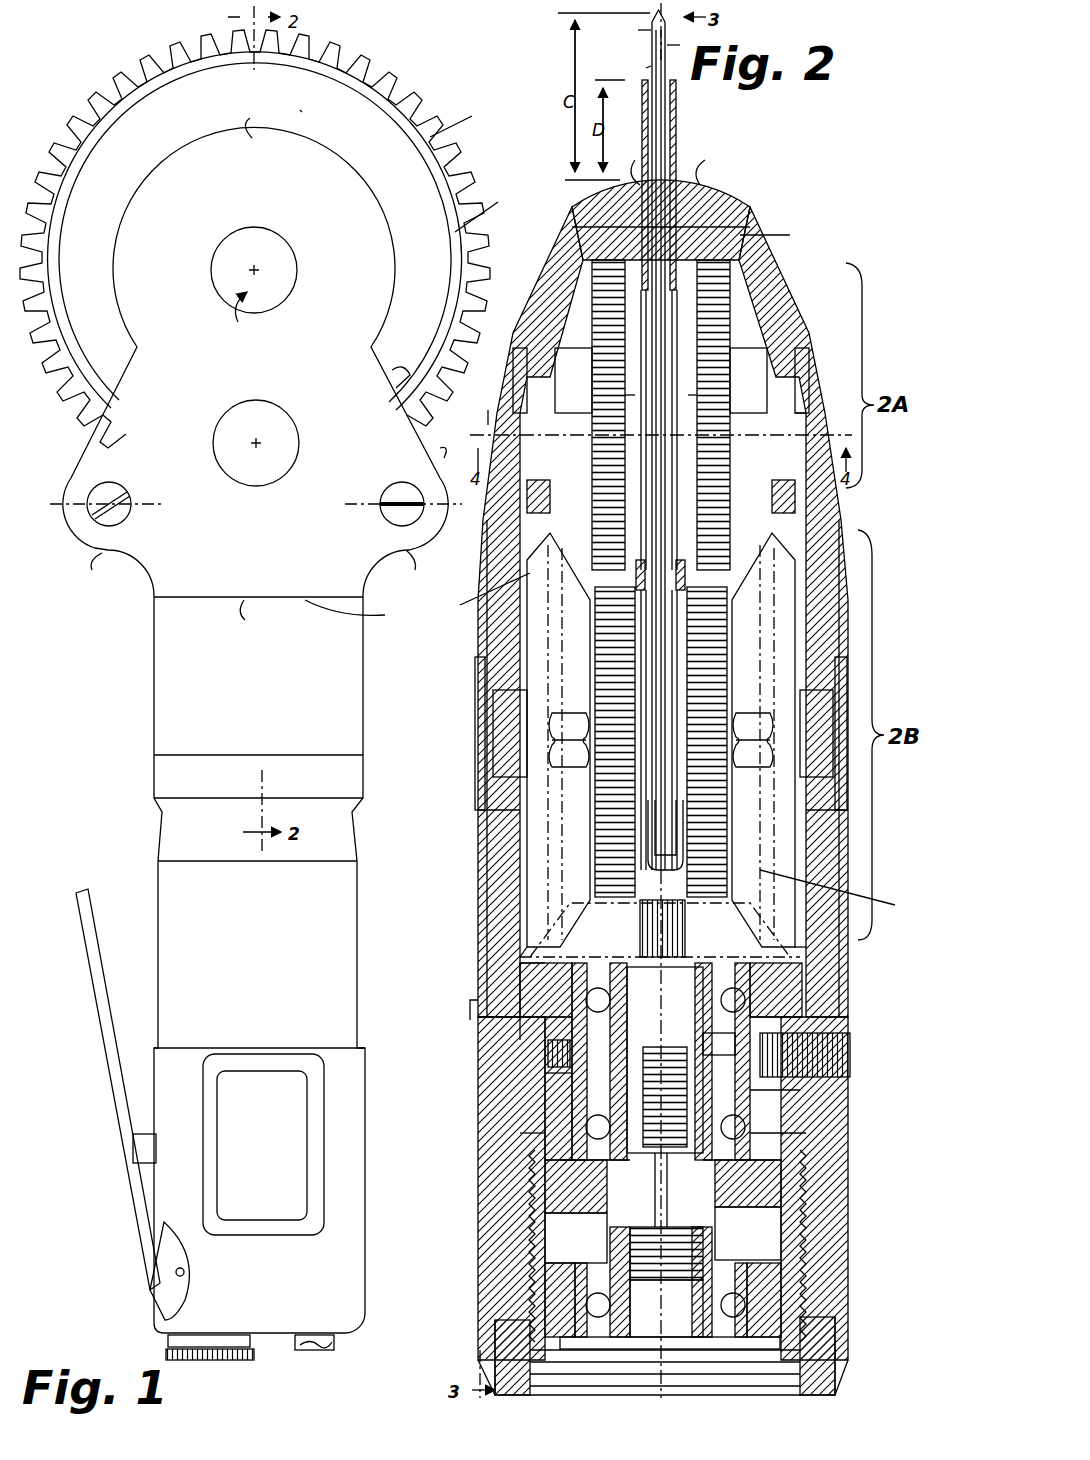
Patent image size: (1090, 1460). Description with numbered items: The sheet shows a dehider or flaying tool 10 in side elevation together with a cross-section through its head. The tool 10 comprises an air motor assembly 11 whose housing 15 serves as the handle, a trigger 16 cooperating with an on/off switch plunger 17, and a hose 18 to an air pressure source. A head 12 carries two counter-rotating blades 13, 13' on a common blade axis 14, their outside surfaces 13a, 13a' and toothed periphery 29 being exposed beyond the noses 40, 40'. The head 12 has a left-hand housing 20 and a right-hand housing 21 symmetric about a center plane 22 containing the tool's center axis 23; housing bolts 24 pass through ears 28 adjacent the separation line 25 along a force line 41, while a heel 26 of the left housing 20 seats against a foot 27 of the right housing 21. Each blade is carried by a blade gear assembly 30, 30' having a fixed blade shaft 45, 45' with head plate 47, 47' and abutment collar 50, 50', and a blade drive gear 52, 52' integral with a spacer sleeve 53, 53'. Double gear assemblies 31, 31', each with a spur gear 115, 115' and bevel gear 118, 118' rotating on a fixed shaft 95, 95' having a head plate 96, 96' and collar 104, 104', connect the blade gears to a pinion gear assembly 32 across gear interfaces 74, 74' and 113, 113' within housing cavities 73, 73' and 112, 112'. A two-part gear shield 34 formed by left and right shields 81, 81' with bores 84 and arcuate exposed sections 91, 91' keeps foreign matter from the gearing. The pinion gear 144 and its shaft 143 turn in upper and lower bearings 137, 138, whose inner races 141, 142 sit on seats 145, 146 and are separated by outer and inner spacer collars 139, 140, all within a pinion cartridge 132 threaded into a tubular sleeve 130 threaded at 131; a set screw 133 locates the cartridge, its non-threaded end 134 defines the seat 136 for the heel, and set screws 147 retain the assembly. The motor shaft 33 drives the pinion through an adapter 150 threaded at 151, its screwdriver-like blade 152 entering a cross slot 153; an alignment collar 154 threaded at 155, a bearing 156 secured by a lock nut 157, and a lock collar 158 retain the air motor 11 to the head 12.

In FIG. 1, the dehider or flaying tool 10 is at (58, 705).
In FIG. 2, the dehider or flaying tool 10 is at (876, 168).
In FIG. 1, the air motor assembly 11 is at (125, 883).
In FIG. 2, the air motor assembly 11 is at (855, 1385).
In FIG. 1, the head 12 is at (336, 140).
In FIG. 2, the head 12 is at (748, 190).
In FIG. 1, the left-hand blade 13 is at (461, 117).
In FIG. 2, the left-hand blade 13 is at (670, 440).
In FIG. 2, the blade outside surface 13a is at (634, 66).
In FIG. 2, the blade outside surface 13a' is at (624, 28).
In FIG. 2, the right-hand blade 13' is at (688, 46).
In FIG. 1, the blade axis 14 is at (258, 268).
In FIG. 2, the blade axis 14 is at (489, 407).
In FIG. 1, the housing 15 is at (245, 1207).
In FIG. 1, the trigger 16 is at (92, 965).
In FIG. 1, the latch 17 is at (150, 1148).
In FIG. 1, the hose 18 is at (335, 1340).
In FIG. 1, the left-hand housing 20 is at (255, 730).
In FIG. 2, the left-hand housing 20 is at (583, 200).
In FIG. 1, the right-hand housing 21 is at (343, 685).
In FIG. 2, the right-hand housing 21 is at (755, 222).
In FIG. 2, the tool center plane 22 is at (690, 1302).
In FIG. 1, the center axis 23 is at (273, 788).
In FIG. 1, the housing bolts 24 is at (120, 514).
In FIG. 1, the separation line 25 is at (254, 616).
In FIG. 2, the separation line 25 is at (530, 1058).
In FIG. 1, the heel section 26 is at (258, 584).
In FIG. 2, the heel section 26 is at (520, 1005).
In FIG. 1, the foot section 27 is at (357, 612).
In FIG. 2, the foot section 27 is at (477, 1025).
In FIG. 1, the ears 28 is at (263, 573).
In FIG. 1, the blade periphery 29 is at (487, 204).
In FIG. 2, the blade gear assembly 30 is at (525, 287).
In FIG. 2, the blade gear assembly 30' is at (800, 312).
In FIG. 2, the double gear assembly 31 is at (515, 740).
In FIG. 2, the double gear assembly 31' is at (828, 740).
In FIG. 2, the pinion gear assembly 32 is at (520, 958).
In FIG. 2, the motor shaft 33 is at (705, 1245).
In FIG. 2, the gear shield 34 is at (655, 880).
In FIG. 1, the nose 40 is at (238, 117).
In FIG. 2, the nose 40 is at (629, 163).
In FIG. 2, the nose 40' is at (715, 165).
In FIG. 1, the force line 41 is at (130, 505).
In FIG. 1, the blade shaft 45 is at (237, 319).
In FIG. 2, the blade shaft 45 is at (491, 506).
In FIG. 2, the blade shaft 45' is at (826, 377).
In FIG. 2, the head plate 47 is at (503, 380).
In FIG. 2, the head plate 47' is at (829, 380).
In FIG. 2, the abutment collar 50 is at (573, 380).
In FIG. 2, the abutment collar 50' is at (748, 380).
In FIG. 2, the blade drive gear 52 is at (622, 415).
In FIG. 2, the blade drive gear 52' is at (702, 415).
In FIG. 2, the spacer sleeve 53 is at (638, 384).
In FIG. 2, the spacer sleeve 53' is at (688, 387).
In FIG. 2, the left housing cavity 73 is at (501, 525).
In FIG. 2, the housing cavity 73' is at (845, 492).
In FIG. 2, the gear interface 74 is at (639, 696).
In FIG. 2, the gear interface 74' is at (688, 696).
In FIG. 1, the left shield 81 is at (255, 219).
In FIG. 2, the left shield 81 is at (639, 230).
In FIG. 2, the right shield 81' is at (780, 234).
In FIG. 2, the bore 84 is at (653, 430).
In FIG. 1, the arcuate exposed section 91 is at (290, 100).
In FIG. 2, the arcuate exposed section 91 is at (630, 185).
In FIG. 2, the arcuate exposed section 91' is at (702, 185).
In FIG. 1, the double gear shaft 95 is at (273, 434).
In FIG. 2, the double gear shaft 95 is at (514, 733).
In FIG. 2, the double gear shaft 95' is at (826, 723).
In FIG. 2, the head plate 96 is at (480, 824).
In FIG. 2, the head plate 96' is at (862, 810).
In FIG. 2, the shaft collar 104 is at (483, 733).
In FIG. 2, the shaft collar 104' is at (865, 738).
In FIG. 2, the housing cavity area 112 is at (602, 925).
In FIG. 2, the housing cavity area 112' is at (858, 947).
In FIG. 2, the gear interface 113 is at (500, 939).
In FIG. 2, the gear interface 113' is at (853, 978).
In FIG. 2, the spur gear 115 is at (537, 742).
In FIG. 2, the spur gear 115' is at (807, 742).
In FIG. 2, the bevel gear 118 is at (485, 596).
In FIG. 2, the bevel gear 118' is at (845, 891).
In FIG. 1, the tubular sleeve 130 is at (258, 745).
In FIG. 2, the tubular sleeve 130 is at (520, 1133).
In FIG. 2, the threads 131 is at (852, 1200).
In FIG. 2, the pinion cartridge 132 is at (545, 1112).
In FIG. 2, the set screw 133 is at (852, 1050).
In FIG. 2, the non-threaded end 134 is at (530, 985).
In FIG. 2, the seat 136 is at (665, 1048).
In FIG. 2, the upper bearing 137 is at (752, 1000).
In FIG. 2, the lower bearing 138 is at (760, 1130).
In FIG. 2, the outer spacer collar 139 is at (750, 1082).
In FIG. 2, the inner spacer collar 140 is at (802, 1092).
In FIG. 2, the inner race 141 is at (665, 1060).
In FIG. 2, the inner race 142 is at (622, 1160).
In FIG. 2, the pinion gear shaft 143 is at (690, 975).
In FIG. 2, the pinion gear 144 is at (838, 1024).
In FIG. 2, the seat 145 is at (649, 928).
In FIG. 2, the seat 146 is at (540, 1178).
In FIG. 2, the set screws 147 is at (852, 1068).
In FIG. 2, the adapter 150 is at (620, 1200).
In FIG. 2, the threads 151 is at (728, 1043).
In FIG. 2, the screw-driver like blade 152 is at (576, 1238).
In FIG. 2, the cross slot 153 is at (728, 1190).
In FIG. 2, the alignment collar 154 is at (545, 1272).
In FIG. 2, the threads 155 is at (540, 1285).
In FIG. 2, the bearing 156 is at (800, 1310).
In FIG. 2, the lock nut 157 is at (712, 1255).
In FIG. 1, the lock collar 158 is at (178, 780).
In FIG. 2, the lock collar 158 is at (836, 1340).